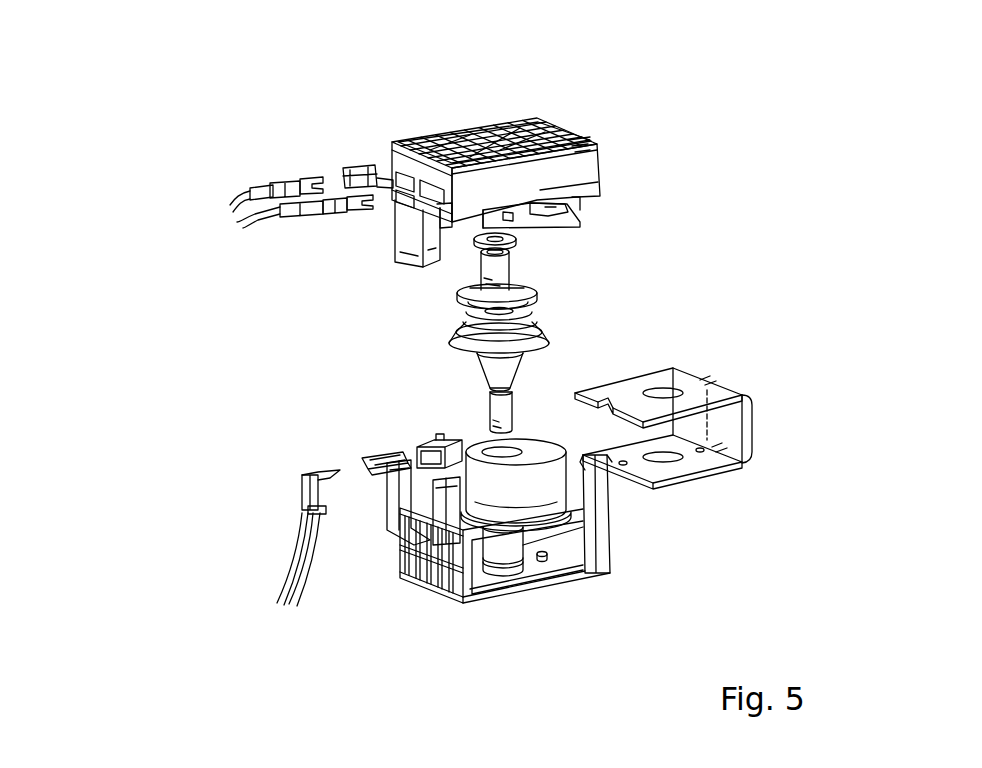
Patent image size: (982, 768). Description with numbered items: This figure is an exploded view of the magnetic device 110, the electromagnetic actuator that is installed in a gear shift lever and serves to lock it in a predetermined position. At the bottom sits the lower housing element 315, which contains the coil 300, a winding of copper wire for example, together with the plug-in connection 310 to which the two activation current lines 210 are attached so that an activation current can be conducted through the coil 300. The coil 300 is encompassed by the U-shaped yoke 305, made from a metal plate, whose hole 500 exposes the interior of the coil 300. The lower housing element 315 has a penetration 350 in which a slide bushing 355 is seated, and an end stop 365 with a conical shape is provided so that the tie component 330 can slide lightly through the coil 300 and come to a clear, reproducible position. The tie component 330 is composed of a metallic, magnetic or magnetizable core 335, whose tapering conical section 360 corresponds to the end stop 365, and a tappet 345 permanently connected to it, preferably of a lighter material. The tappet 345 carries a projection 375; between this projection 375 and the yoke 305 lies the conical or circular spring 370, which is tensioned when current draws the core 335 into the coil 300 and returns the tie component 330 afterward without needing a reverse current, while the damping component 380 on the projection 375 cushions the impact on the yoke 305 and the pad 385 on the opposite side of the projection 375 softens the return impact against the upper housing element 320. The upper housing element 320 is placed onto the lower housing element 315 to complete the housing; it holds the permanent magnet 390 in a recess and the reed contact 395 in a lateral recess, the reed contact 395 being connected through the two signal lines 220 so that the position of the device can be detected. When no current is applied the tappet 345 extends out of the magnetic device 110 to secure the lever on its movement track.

The magnetic device 110 is at (655, 137).
The activation current lines 210 is at (297, 585).
The signal lines 220 is at (247, 228).
The coil 300 is at (527, 433).
The yoke 305 is at (730, 427).
The plug-in connection 310 is at (367, 479).
The lower housing element 315 is at (610, 543).
The upper housing element 320 is at (600, 173).
The tie component 330 is at (524, 258).
The core 335 is at (480, 362).
The tappet 345 is at (463, 300).
The penetration 350 is at (490, 577).
The slide bushing 355 is at (504, 566).
The section 360 is at (488, 385).
The end stop 365 is at (504, 526).
The spring 370 is at (453, 340).
The projection 375 is at (495, 268).
The damping component 380 is at (512, 300).
The pad 385 is at (476, 243).
The permanent magnet 390 is at (598, 215).
The reed contact 395 is at (347, 167).
The hole 500 is at (670, 393).